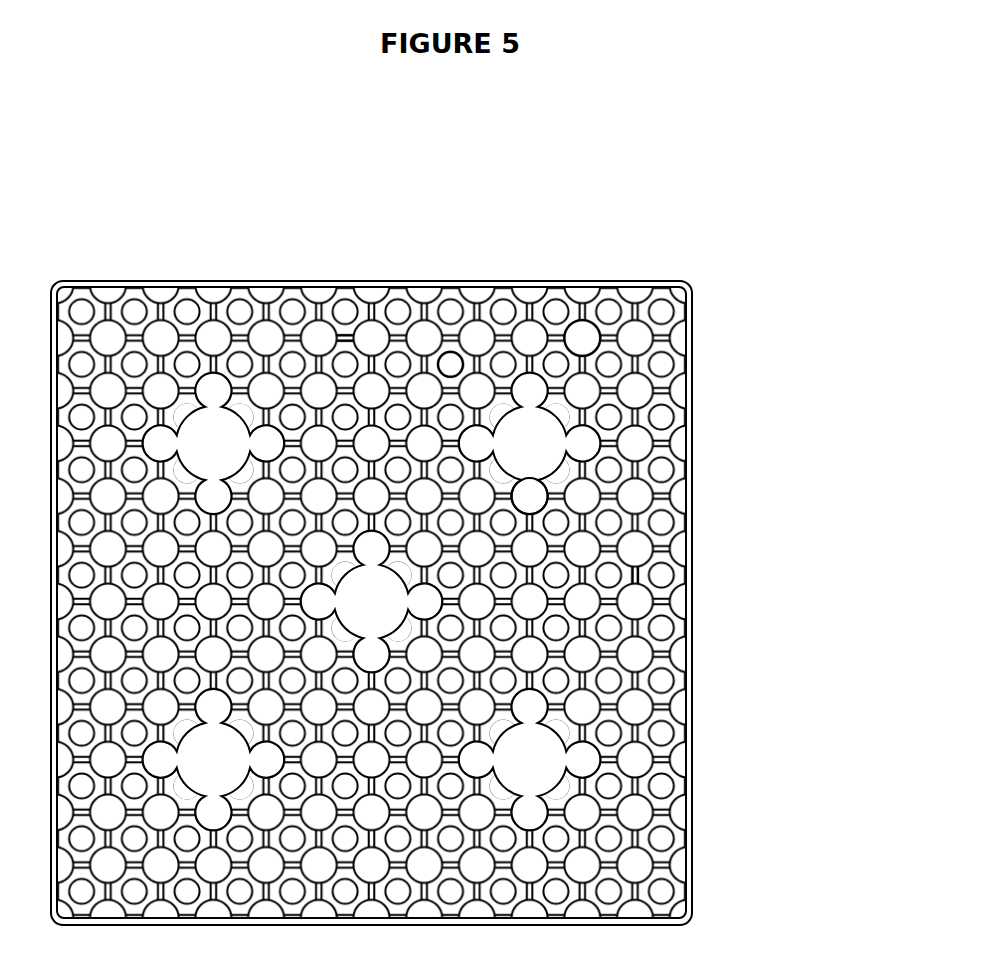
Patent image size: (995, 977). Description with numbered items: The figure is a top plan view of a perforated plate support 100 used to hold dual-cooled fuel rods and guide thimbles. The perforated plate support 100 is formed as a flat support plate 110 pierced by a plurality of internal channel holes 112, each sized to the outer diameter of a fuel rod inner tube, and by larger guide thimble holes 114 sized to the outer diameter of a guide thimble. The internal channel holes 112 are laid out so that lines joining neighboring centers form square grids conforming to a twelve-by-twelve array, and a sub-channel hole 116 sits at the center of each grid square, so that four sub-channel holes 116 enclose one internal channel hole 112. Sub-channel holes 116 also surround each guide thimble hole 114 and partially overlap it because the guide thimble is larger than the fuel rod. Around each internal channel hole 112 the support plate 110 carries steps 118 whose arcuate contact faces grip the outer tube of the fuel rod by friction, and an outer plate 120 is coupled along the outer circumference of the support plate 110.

The perforated plate support 100 is at (460, 559).
The support plate 110 is at (343, 343).
The internal channel hole 112 is at (455, 359).
The guide thimble hole 114 is at (549, 425).
The sub-channel hole 116 is at (584, 336).
The step 118 is at (634, 577).
The outer plate 120 is at (659, 259).